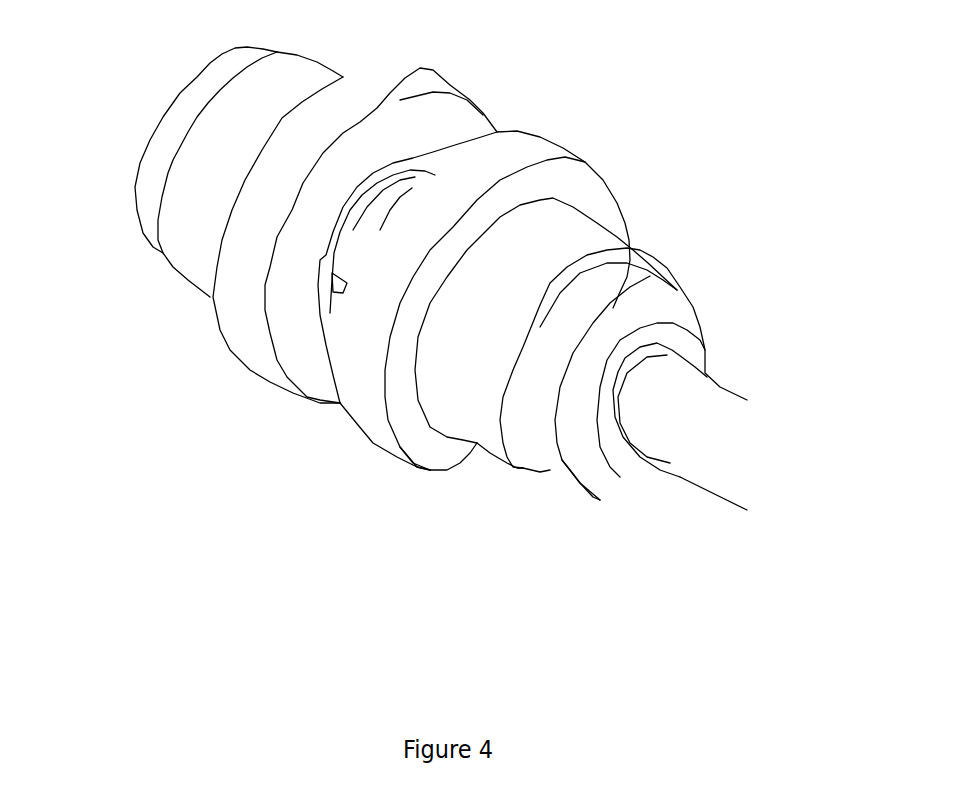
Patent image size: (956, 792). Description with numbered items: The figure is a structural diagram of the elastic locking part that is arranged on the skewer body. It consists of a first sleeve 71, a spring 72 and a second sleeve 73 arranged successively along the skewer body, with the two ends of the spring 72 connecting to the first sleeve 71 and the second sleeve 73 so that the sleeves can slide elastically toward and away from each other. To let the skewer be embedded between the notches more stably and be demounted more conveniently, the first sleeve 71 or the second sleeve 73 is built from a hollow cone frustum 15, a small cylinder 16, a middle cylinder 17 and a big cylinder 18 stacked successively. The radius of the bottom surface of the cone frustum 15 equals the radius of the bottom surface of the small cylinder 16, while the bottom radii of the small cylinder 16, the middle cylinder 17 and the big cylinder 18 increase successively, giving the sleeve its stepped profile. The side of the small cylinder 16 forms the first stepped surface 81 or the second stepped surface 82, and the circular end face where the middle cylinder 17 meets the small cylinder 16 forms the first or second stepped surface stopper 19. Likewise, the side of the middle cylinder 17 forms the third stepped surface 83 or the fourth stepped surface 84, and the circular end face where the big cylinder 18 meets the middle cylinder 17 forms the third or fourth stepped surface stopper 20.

The first stepped surface 81 is at (155, 167).
The third stepped surface 83 is at (195, 208).
The first sleeve 71 is at (247, 370).
The spring 72 is at (381, 192).
The big cylinder 18 is at (340, 403).
The third stepped surface stopper 20 is at (507, 193).
The fourth stepped surface 84 is at (520, 253).
The first stepped surface stopper 19 is at (603, 272).
The second stepped surface 82 is at (605, 302).
The hollow cone frustum 15 is at (640, 342).
The middle cylinder 17 is at (477, 443).
The small cylinder 16 is at (550, 470).
The second sleeve 73 is at (562, 462).